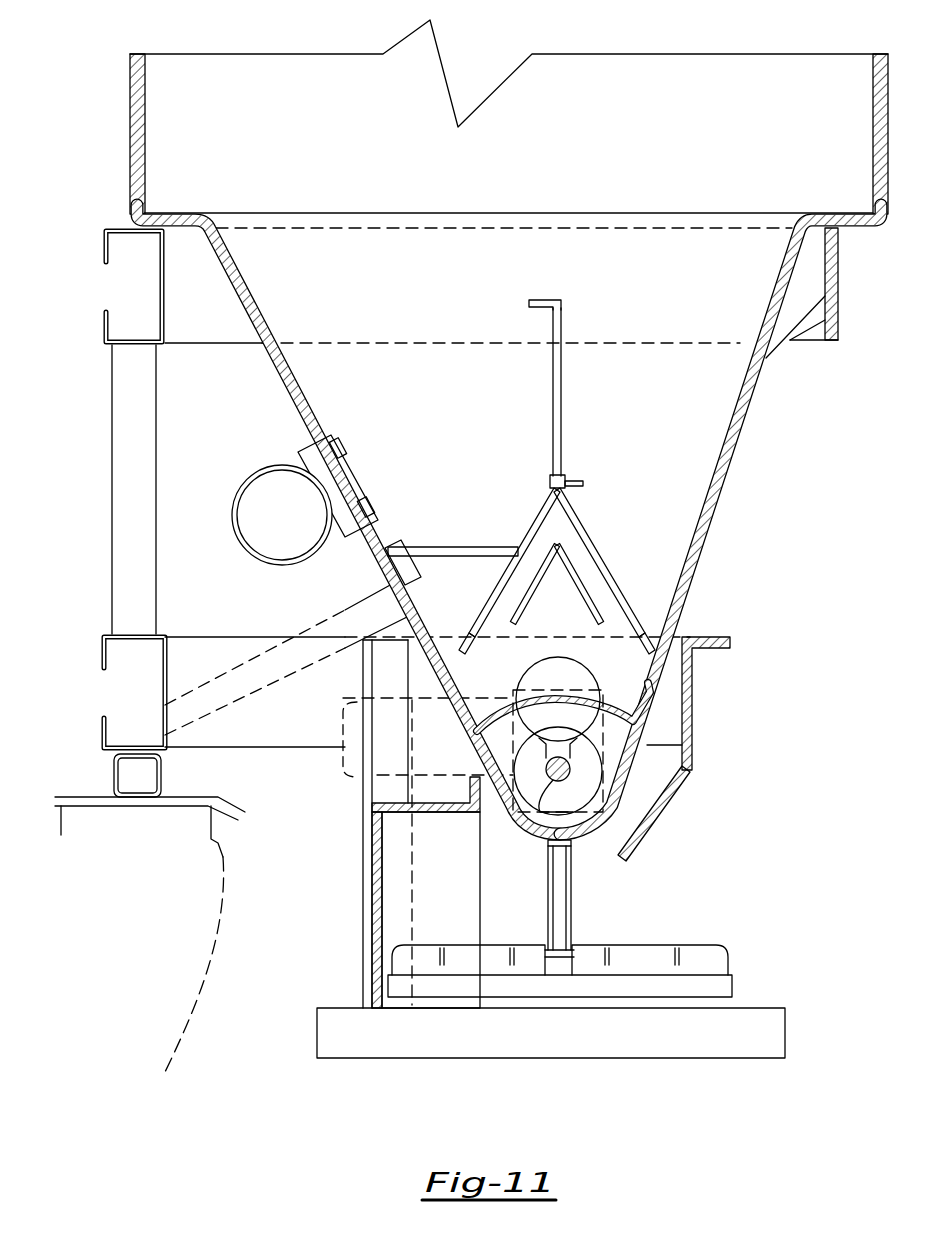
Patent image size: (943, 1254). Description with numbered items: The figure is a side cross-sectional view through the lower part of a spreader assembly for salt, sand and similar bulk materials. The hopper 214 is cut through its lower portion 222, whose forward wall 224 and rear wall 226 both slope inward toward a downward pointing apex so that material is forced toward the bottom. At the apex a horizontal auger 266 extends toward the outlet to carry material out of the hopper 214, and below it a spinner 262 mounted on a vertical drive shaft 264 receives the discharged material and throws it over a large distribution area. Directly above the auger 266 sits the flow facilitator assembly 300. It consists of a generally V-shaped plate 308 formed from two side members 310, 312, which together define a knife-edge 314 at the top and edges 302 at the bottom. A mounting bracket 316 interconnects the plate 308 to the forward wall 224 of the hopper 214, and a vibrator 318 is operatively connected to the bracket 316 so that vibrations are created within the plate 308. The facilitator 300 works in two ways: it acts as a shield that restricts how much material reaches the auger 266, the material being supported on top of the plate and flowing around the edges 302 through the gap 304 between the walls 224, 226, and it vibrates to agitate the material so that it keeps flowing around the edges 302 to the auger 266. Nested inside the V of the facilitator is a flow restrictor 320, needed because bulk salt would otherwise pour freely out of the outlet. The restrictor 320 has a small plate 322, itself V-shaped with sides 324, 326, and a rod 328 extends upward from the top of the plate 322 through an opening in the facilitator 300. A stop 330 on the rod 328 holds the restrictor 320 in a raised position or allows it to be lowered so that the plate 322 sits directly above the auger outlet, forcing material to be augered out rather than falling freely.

The hopper 214 is at (130, 140).
The lower portion 222 is at (509, 519).
The forward wall 224 is at (277, 370).
The rear wall 226 is at (772, 448).
The spinner 262 is at (693, 953).
The vertical drive shaft 264 is at (556, 895).
The horizontal auger 266 is at (540, 838).
The flow facilitator assembly 300 is at (532, 427).
The edges 302 is at (460, 657).
The gap 304 is at (477, 728).
The V-shaped plate 308 is at (576, 547).
The side member 310 is at (613, 567).
The side member 312 is at (483, 600).
The knife-edge 314 is at (567, 468).
The mounting bracket 316 is at (440, 547).
The vibrator 318 is at (278, 505).
The flow restrictor 320 is at (545, 427).
The small plate 322 is at (652, 606).
The side 324 is at (588, 605).
The side 326 is at (543, 567).
The rod 328 is at (545, 300).
The stop 330 is at (584, 485).